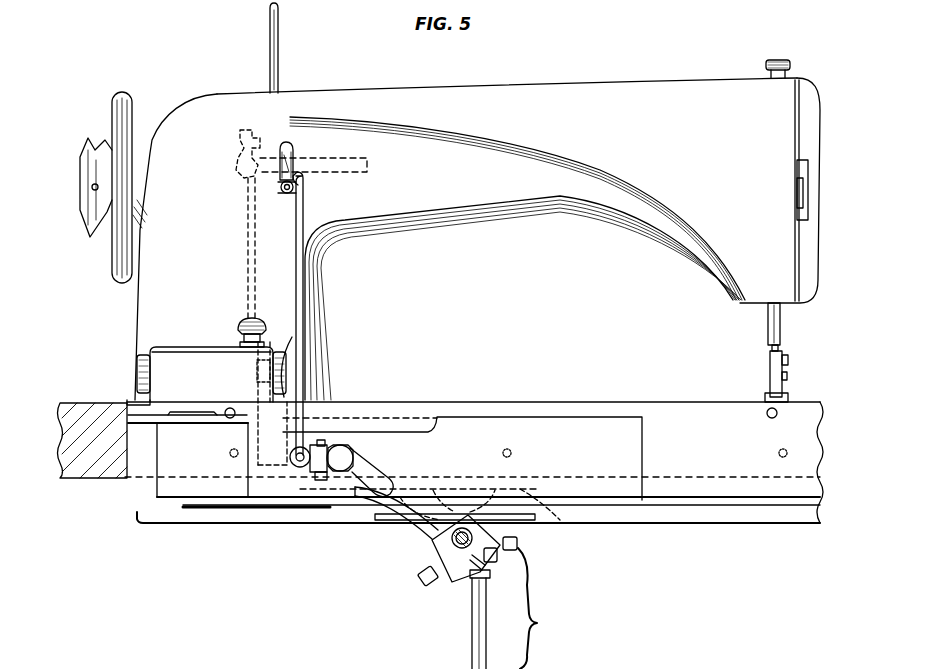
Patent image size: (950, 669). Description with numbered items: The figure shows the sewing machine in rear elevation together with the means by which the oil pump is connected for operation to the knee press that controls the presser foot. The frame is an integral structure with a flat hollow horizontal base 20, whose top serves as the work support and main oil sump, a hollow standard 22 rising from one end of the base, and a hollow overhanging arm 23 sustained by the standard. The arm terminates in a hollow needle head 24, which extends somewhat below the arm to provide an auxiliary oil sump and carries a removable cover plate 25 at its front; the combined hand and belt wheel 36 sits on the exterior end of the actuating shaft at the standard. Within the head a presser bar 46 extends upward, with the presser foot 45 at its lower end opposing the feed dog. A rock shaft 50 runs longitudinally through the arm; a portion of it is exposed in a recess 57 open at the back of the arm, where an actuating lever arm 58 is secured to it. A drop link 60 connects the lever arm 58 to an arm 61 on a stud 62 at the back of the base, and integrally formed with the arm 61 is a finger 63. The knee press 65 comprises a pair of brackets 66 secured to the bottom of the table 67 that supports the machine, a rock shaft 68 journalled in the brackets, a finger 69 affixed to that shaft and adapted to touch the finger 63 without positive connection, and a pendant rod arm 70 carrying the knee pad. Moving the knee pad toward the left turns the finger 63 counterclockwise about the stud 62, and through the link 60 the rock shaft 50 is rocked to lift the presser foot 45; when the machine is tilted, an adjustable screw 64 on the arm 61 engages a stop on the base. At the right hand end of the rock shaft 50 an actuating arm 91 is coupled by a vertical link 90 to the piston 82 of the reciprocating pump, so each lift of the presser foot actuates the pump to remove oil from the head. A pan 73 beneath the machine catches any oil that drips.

The base 20 is at (665, 390).
The standard 22 is at (153, 302).
The overhanging arm 23 is at (498, 198).
The needle head 24 is at (742, 262).
The cover plate 25 is at (803, 133).
The combined hand and belt wheel 36 is at (122, 110).
The presser foot 45 is at (765, 393).
The presser bar 46 is at (773, 328).
The rock shaft 50 is at (352, 155).
The recess 57 is at (283, 143).
The actuating lever arm 58 is at (292, 158).
The drop link 60 is at (305, 317).
The arm 61 is at (302, 467).
The stud 62 is at (344, 445).
The finger 63 is at (370, 468).
The adjustable screw 64 is at (323, 481).
The knee press 65 is at (541, 608).
The brackets 66 is at (544, 500).
The table 67 is at (102, 473).
The rock shaft 68 is at (450, 543).
The finger 69 is at (407, 527).
The pendant rod arm 70 is at (471, 642).
The pan 73 is at (690, 524).
The piston 82 is at (257, 394).
The vertical link 90 is at (247, 239).
The actuating arm 91 is at (238, 145).